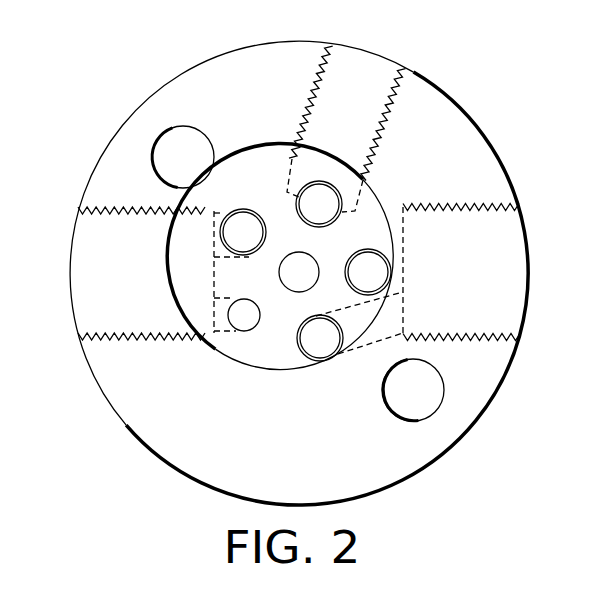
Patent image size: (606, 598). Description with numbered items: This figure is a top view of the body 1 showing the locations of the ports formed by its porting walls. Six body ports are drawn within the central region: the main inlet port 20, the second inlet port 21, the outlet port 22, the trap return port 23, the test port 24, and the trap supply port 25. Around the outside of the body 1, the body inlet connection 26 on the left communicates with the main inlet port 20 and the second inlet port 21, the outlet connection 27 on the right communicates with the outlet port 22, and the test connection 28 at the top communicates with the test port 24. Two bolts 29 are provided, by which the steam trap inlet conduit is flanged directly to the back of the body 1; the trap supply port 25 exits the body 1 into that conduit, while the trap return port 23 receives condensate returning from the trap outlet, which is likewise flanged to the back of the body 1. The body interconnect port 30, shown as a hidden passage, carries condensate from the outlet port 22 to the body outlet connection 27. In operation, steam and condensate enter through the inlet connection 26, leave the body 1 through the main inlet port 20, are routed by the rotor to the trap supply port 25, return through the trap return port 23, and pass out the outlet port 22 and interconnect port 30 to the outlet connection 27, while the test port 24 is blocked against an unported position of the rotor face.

The body 1 is at (462, 130).
The main inlet port 20 is at (243, 232).
The second inlet port 21 is at (244, 315).
The outlet port 22 is at (320, 338).
The trap return port 23 is at (368, 272).
The test port 24 is at (319, 204).
The trap supply port 25 is at (299, 272).
The body inlet connection 26 is at (88, 275).
The outlet connection 27 is at (517, 274).
The test connection 28 is at (365, 62).
The bolts 29 is at (202, 130).
The body interconnect port 30 is at (363, 328).